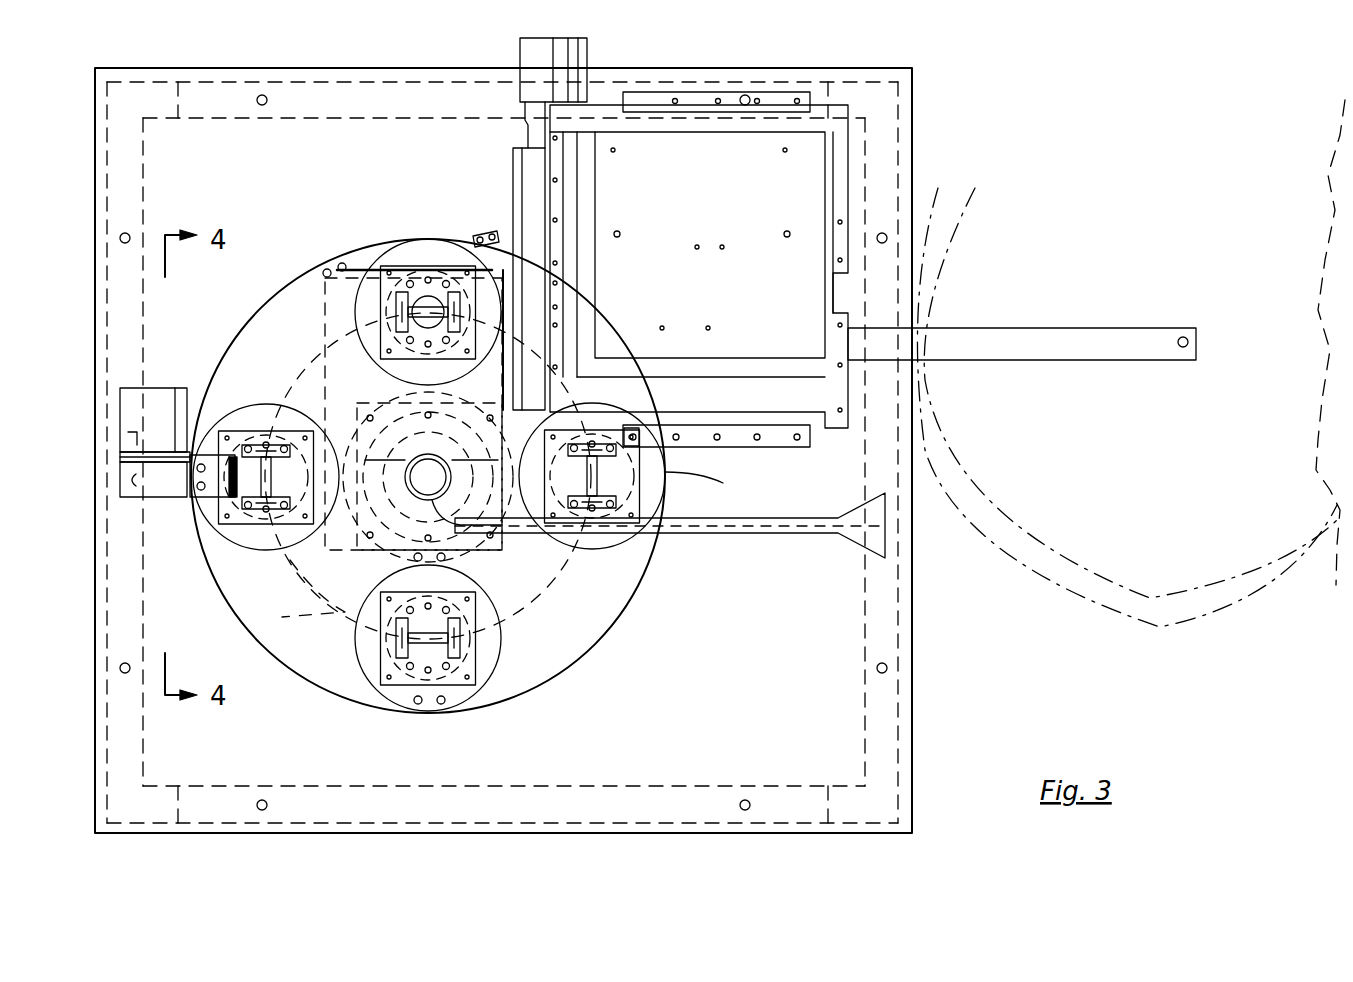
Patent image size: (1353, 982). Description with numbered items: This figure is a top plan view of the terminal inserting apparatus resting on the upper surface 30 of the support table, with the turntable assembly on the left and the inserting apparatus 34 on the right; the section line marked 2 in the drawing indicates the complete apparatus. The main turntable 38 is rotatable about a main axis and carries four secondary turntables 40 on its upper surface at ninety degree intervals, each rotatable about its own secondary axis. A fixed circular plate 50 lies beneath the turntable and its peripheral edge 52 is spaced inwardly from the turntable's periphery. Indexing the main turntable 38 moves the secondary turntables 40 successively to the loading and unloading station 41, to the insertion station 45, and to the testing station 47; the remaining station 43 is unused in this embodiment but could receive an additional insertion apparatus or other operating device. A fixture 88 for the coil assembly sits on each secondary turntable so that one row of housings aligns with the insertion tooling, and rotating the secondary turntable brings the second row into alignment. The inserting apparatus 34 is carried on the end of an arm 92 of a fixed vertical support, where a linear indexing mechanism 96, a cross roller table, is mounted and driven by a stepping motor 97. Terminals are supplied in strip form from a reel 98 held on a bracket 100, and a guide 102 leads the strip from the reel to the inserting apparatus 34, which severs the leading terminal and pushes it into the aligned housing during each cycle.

The apparatus 2 is at (422, 645).
The upper surface 30 is at (818, 690).
The inserting apparatus 34 is at (315, 330).
The main turntable 38 is at (598, 600).
The secondary turntables 40 is at (437, 262).
The loading and unloading station 41 is at (365, 682).
The station 43 is at (712, 487).
The insertion station 45 is at (372, 262).
The testing station 47 is at (258, 405).
The fixed circular plate 50 is at (568, 602).
The peripheral edge 52 is at (295, 593).
The fixture 88 is at (462, 660).
The arm 92 is at (816, 160).
The linear indexing mechanism 96 is at (517, 148).
The stepping motor 97 is at (585, 50).
The reel 98 is at (1165, 613).
The bracket 100 is at (1070, 355).
The guide 102 is at (760, 528).